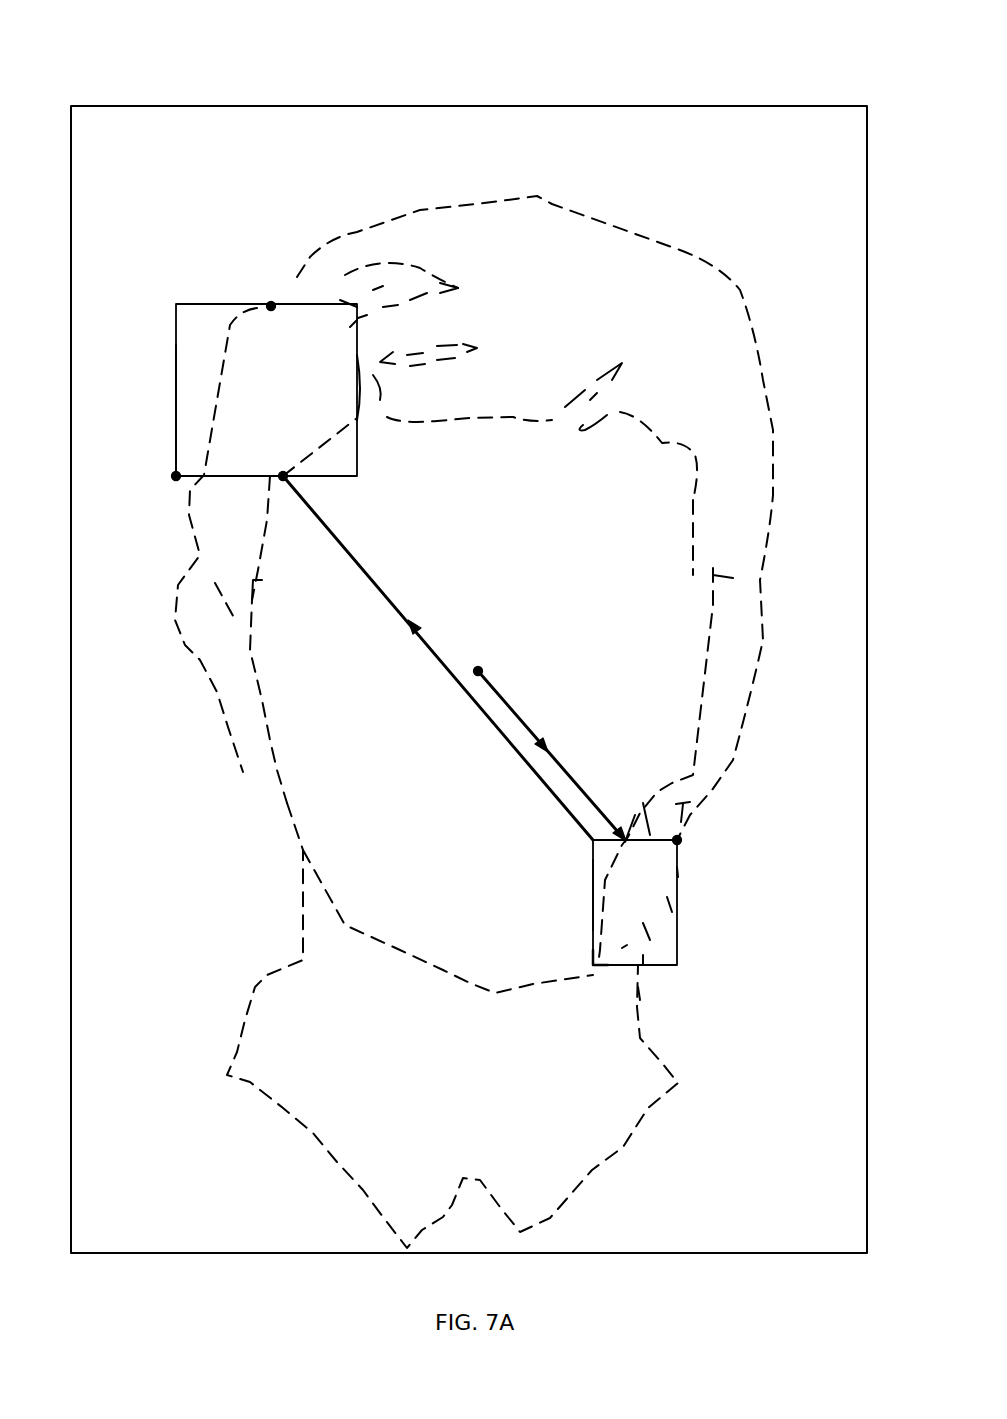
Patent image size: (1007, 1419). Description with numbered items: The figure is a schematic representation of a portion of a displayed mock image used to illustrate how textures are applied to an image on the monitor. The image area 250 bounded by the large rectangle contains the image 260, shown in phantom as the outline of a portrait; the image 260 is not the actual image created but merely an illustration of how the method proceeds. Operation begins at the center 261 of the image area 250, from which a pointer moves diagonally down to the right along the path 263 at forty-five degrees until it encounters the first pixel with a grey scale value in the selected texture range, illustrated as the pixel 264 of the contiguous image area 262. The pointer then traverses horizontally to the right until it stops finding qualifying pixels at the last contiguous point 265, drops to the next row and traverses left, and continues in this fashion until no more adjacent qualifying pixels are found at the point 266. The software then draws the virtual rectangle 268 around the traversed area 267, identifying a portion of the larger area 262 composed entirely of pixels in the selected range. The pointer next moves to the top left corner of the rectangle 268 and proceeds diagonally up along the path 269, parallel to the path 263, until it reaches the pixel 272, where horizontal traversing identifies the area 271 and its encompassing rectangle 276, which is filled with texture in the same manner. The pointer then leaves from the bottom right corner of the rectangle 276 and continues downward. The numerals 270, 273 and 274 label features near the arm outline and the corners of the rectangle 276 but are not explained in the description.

The image area 250 is at (535, 88).
The image 260 is at (673, 243).
The center 261 is at (478, 671).
The contiguous image area 262 is at (683, 805).
The path 263 is at (528, 724).
The pixel 264 is at (627, 840).
The last contiguous point 265 is at (677, 840).
The point 266 is at (593, 965).
The area 267 is at (593, 893).
The virtual rectangle 268 is at (677, 920).
The path 269 is at (388, 595).
The arm outline 270 is at (253, 582).
The area 271 is at (208, 425).
The pixel 272 is at (283, 476).
The corner point 273 is at (176, 476).
The reference point 274 is at (271, 304).
The rectangle 276 is at (176, 345).